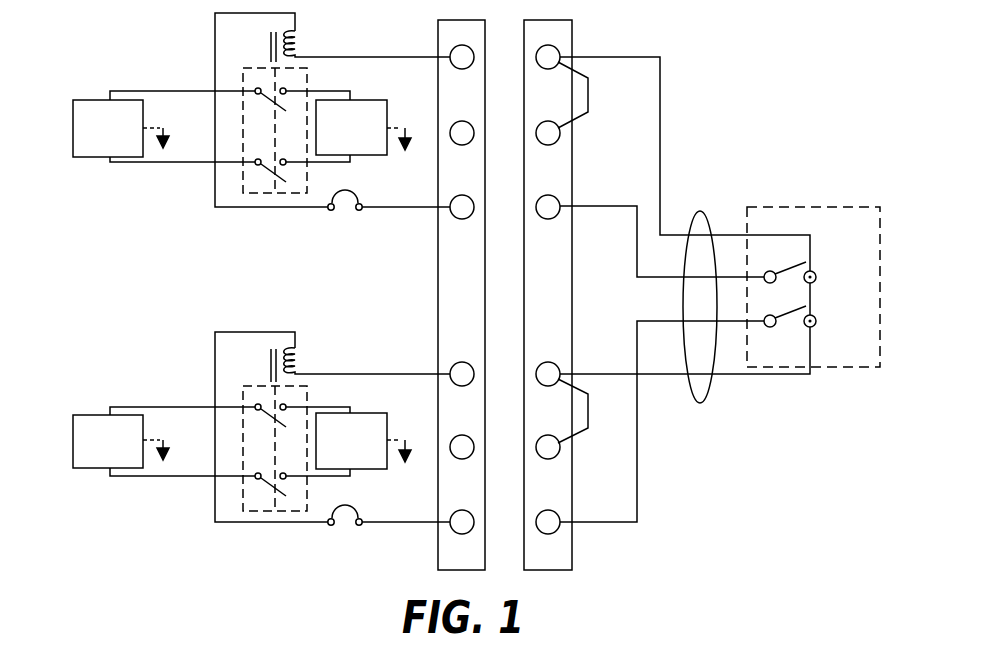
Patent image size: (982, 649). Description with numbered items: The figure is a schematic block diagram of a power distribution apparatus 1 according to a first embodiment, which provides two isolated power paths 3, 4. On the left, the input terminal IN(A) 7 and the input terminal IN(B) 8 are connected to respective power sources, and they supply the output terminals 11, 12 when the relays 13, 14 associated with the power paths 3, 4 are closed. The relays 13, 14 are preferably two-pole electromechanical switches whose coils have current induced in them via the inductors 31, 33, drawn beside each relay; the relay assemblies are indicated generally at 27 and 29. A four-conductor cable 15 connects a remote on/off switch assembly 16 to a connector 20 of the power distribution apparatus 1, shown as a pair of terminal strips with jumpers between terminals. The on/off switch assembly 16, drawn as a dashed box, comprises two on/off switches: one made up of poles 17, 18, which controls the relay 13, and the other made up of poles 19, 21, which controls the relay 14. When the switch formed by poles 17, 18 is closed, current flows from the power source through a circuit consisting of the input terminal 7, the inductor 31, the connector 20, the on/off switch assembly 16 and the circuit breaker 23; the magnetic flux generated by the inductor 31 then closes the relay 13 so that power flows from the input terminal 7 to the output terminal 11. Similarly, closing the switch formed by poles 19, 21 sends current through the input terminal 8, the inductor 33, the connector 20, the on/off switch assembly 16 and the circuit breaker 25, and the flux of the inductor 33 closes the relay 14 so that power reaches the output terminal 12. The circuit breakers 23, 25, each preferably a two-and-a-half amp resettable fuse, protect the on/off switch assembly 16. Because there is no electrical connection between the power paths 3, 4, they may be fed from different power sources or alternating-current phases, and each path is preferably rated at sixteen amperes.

The power distribution apparatus 1 is at (777, 71).
The power path 3 is at (153, 163).
The power path 4 is at (167, 479).
The input terminal IN(A) 7 is at (83, 158).
The input terminal IN(B) 8 is at (88, 470).
The output terminal 11 is at (388, 156).
The output terminal 12 is at (388, 470).
The relay 13 is at (250, 65).
The relay 14 is at (250, 383).
The four-conductor cable 15 is at (707, 218).
The on/off switch assembly 16 is at (832, 207).
The pole 17 is at (768, 270).
The pole 18 is at (816, 273).
The pole 19 is at (770, 328).
The connector 20 is at (571, 25).
The pole 21 is at (815, 327).
The circuit breaker 23 is at (355, 266).
The circuit breaker 25 is at (349, 583).
The relay A 27 is at (265, 210).
The relay B 29 is at (247, 524).
The inductor 31 is at (301, 46).
The inductor 33 is at (303, 358).